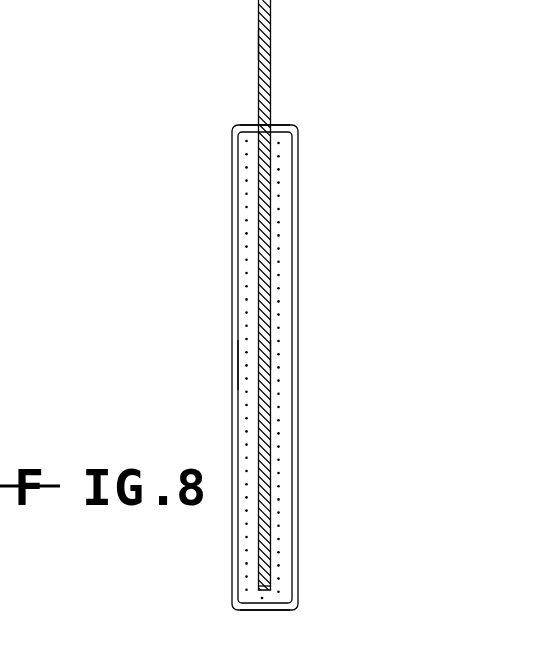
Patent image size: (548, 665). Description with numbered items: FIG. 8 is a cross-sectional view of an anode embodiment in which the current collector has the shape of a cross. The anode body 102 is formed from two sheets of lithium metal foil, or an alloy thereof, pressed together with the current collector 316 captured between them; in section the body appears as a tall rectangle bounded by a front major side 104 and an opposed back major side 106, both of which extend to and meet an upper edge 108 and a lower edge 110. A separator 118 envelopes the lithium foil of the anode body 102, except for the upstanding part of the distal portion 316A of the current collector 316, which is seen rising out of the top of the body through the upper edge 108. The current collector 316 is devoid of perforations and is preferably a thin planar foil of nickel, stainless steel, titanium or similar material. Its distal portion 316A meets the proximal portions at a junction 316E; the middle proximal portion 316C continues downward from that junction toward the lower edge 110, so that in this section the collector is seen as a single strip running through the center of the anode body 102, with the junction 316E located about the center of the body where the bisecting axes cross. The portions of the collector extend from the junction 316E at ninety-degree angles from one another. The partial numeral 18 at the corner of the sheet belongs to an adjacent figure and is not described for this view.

The partial reference (adjacent figure) 18 is at (17, 0).
The middle proximal portion 316C is at (400, 0).
The current collector 316 is at (262, 92).
The distal portion 316A is at (260, 45).
The junction 316E is at (268, 353).
The separator 118 is at (297, 240).
The front major side 104 is at (295, 400).
The upper edge 108 is at (277, 125).
The back major side 106 is at (238, 365).
The anode body 102 is at (275, 484).
The lower edge 110 is at (265, 612).